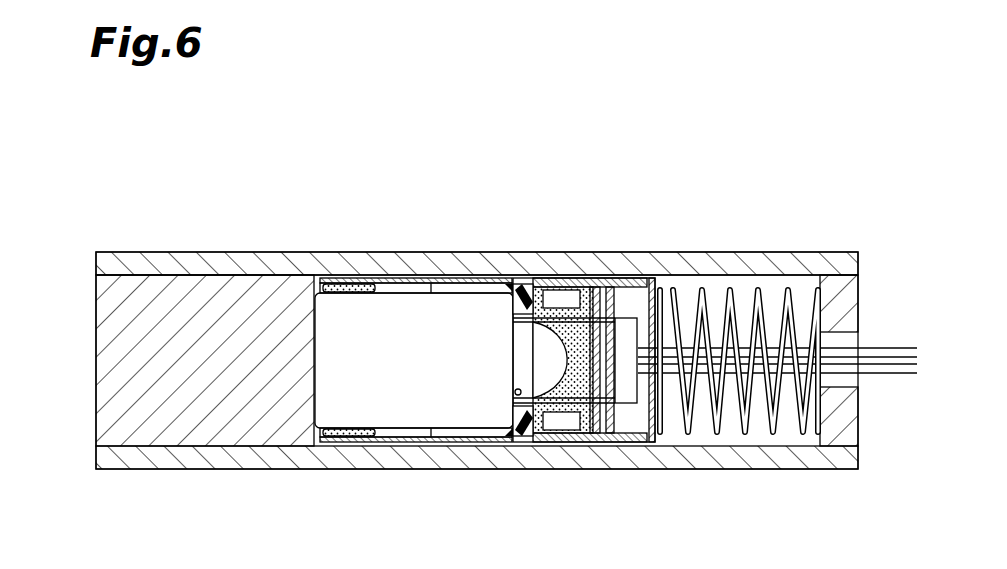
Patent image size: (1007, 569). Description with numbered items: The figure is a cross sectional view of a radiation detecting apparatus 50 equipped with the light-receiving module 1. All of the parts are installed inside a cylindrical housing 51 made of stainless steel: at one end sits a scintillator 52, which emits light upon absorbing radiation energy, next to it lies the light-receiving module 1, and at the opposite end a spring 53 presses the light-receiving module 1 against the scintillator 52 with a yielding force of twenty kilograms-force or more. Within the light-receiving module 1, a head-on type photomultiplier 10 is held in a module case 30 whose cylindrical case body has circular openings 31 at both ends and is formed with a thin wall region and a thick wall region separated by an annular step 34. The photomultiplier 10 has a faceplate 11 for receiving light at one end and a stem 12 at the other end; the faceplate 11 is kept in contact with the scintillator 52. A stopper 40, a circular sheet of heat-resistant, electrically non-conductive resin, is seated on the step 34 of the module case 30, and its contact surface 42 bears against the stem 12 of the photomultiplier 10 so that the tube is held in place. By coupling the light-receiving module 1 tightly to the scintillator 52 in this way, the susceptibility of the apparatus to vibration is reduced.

The light-receiving module 1 is at (488, 274).
The photomultiplier 10 is at (402, 380).
The faceplate 11 is at (302, 447).
The stem 12 is at (514, 391).
The module case 30 is at (598, 443).
The circular openings 31 is at (318, 447).
The annular step 34 is at (526, 434).
The stopper 40 is at (518, 286).
The contact surface 42 is at (513, 305).
The radiation detecting apparatus 50 is at (214, 250).
The cylindrical housing 51 is at (172, 460).
The scintillator 52 is at (105, 364).
The spring 53 is at (730, 415).